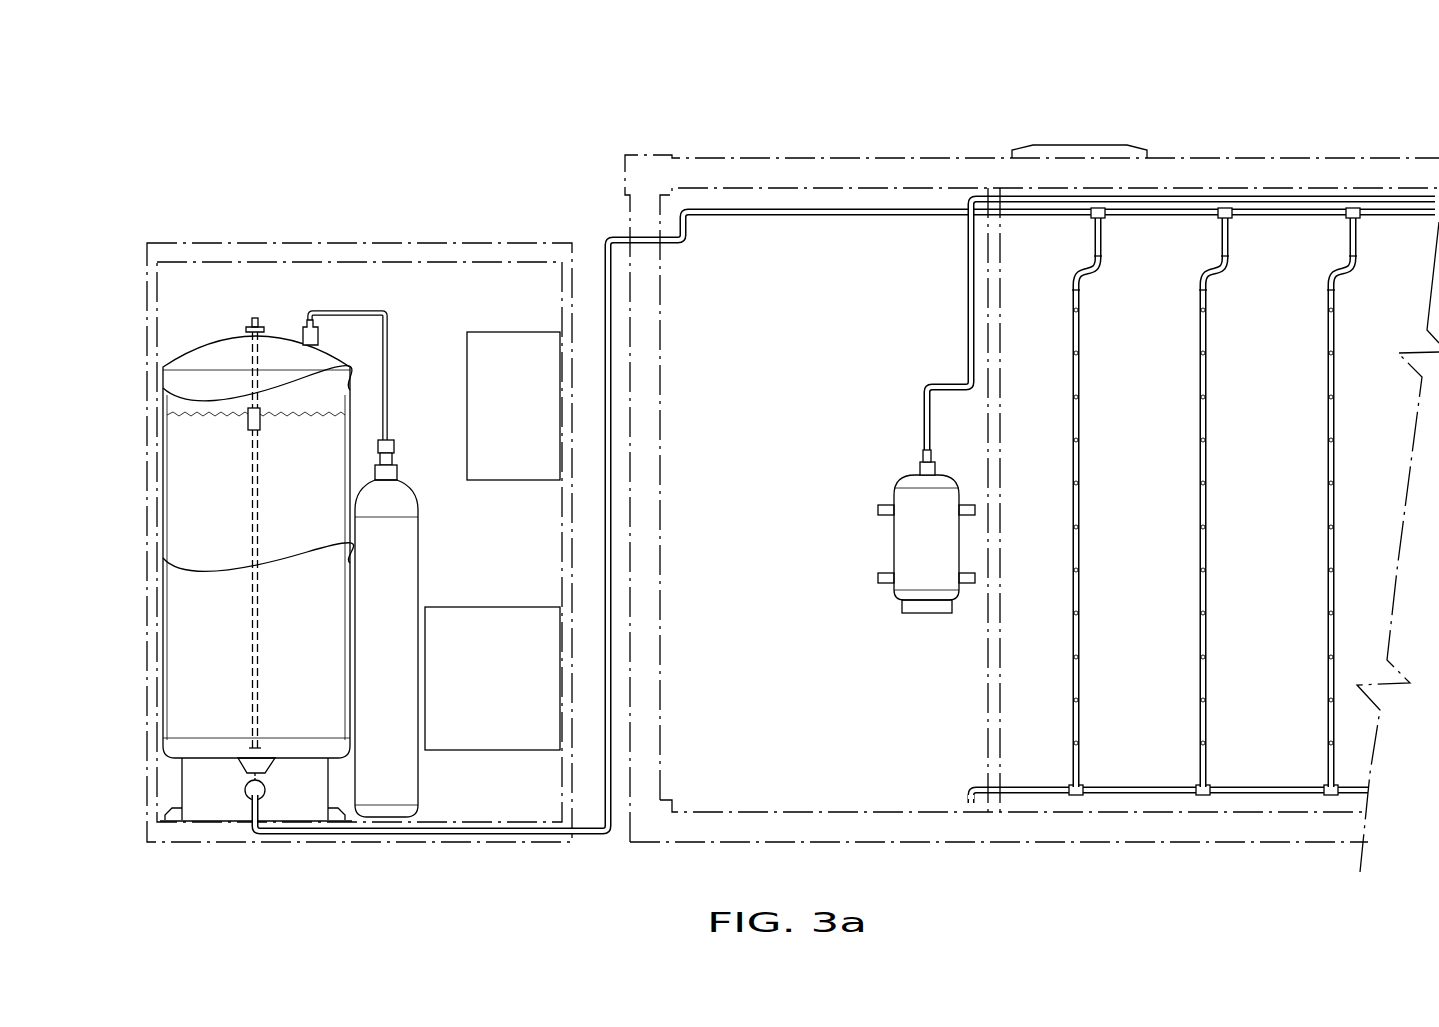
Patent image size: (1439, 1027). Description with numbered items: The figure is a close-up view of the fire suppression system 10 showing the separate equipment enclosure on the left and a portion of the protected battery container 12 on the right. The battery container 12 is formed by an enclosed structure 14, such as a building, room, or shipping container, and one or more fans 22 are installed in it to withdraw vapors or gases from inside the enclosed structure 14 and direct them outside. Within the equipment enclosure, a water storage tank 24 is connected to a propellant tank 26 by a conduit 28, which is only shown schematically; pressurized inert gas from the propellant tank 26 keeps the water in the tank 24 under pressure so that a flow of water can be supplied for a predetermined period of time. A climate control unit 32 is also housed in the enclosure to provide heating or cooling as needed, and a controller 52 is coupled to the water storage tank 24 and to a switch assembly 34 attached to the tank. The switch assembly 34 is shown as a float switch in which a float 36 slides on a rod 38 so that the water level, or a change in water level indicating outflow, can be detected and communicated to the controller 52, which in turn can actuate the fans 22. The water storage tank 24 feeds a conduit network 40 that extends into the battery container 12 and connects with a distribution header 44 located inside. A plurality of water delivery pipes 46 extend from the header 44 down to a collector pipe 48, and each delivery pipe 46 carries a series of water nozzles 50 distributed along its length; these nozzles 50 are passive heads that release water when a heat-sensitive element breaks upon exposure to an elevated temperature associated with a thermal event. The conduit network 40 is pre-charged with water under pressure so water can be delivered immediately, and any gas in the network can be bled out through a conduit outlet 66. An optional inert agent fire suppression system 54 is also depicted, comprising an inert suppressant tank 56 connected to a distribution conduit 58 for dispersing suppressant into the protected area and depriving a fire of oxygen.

The fire suppression system 10 is at (271, 172).
The battery container 12 is at (1355, 118).
The enclosed structure 14 is at (905, 156).
The fans 22 is at (1060, 148).
The water storage tank 24 is at (192, 623).
The propellant tank 26 is at (407, 565).
The conduit 28 is at (388, 326).
The climate control unit 32 is at (485, 638).
The switch assembly 34 is at (250, 322).
The float 36 is at (260, 412).
The rod 38 is at (257, 508).
The conduit network 40 is at (596, 840).
The distribution header 44 is at (1185, 213).
The water delivery pipes 46 is at (1079, 377).
The collector pipe 48 is at (1160, 791).
The water nozzles 50 is at (1079, 483).
The controller 52 is at (518, 457).
The inert agent fire suppression system 54 is at (884, 622).
The inert suppressant tank 56 is at (900, 543).
The distribution conduit 58 is at (968, 238).
The conduit outlet 66 is at (967, 797).